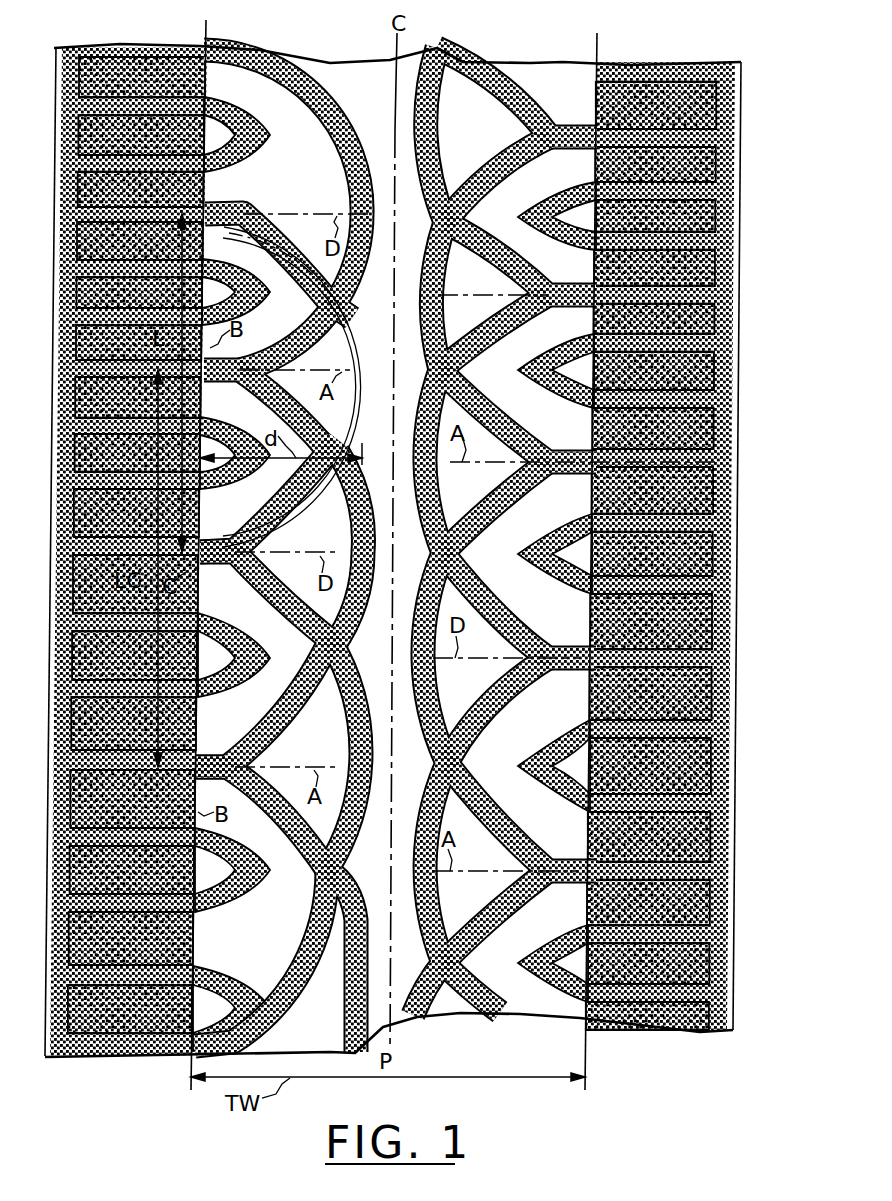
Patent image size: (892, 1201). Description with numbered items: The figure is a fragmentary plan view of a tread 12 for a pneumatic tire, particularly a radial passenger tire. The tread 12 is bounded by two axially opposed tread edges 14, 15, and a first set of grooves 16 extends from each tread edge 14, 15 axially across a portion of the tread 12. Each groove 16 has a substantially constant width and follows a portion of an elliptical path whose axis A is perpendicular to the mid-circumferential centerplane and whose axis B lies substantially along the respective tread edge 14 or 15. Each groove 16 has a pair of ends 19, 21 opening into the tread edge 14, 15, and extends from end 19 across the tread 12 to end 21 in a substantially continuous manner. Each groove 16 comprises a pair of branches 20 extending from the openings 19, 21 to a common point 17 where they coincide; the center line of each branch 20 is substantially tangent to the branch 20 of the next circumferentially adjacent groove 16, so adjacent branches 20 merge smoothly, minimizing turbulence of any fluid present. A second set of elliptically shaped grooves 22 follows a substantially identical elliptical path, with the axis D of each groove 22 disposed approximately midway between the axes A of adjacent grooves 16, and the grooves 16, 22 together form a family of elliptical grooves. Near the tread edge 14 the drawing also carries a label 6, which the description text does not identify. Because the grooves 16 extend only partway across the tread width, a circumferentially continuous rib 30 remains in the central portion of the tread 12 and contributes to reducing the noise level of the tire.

The tread 12 is at (478, 50).
The tread edge 14 is at (206, 26).
The tread edge 15 is at (586, 1043).
The groove 16 is at (350, 322).
The common point 17 is at (362, 398).
The end 19 is at (216, 972).
The branch 20 is at (250, 548).
The end 21 is at (214, 550).
The groove 22 is at (355, 168).
The rib 30 is at (383, 72).
The rib 6 is at (206, 206).